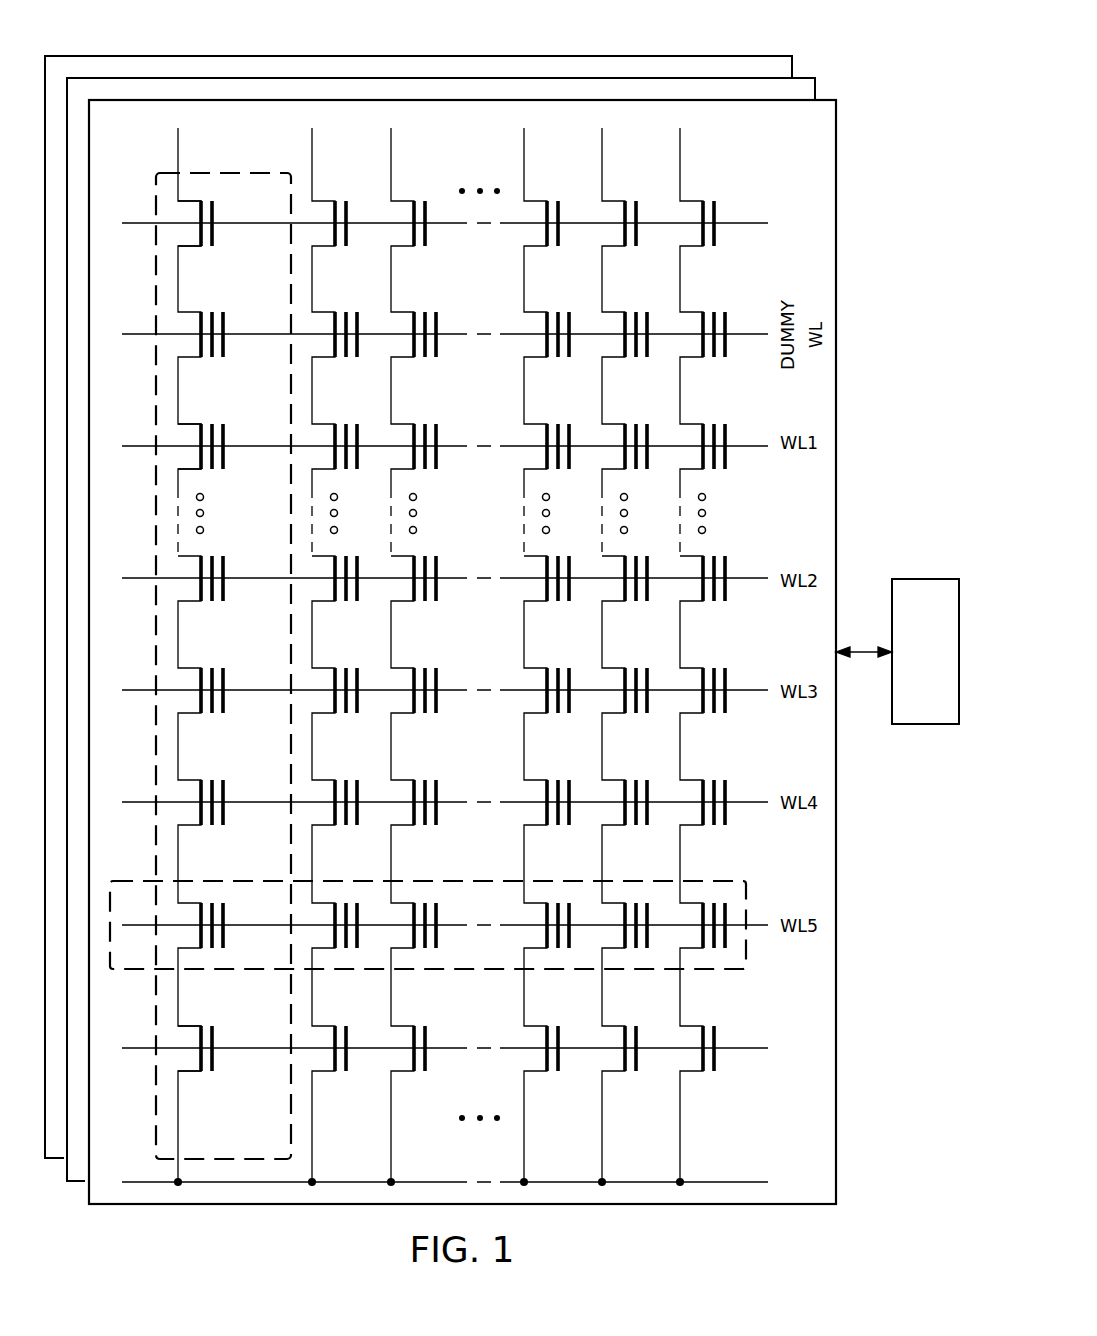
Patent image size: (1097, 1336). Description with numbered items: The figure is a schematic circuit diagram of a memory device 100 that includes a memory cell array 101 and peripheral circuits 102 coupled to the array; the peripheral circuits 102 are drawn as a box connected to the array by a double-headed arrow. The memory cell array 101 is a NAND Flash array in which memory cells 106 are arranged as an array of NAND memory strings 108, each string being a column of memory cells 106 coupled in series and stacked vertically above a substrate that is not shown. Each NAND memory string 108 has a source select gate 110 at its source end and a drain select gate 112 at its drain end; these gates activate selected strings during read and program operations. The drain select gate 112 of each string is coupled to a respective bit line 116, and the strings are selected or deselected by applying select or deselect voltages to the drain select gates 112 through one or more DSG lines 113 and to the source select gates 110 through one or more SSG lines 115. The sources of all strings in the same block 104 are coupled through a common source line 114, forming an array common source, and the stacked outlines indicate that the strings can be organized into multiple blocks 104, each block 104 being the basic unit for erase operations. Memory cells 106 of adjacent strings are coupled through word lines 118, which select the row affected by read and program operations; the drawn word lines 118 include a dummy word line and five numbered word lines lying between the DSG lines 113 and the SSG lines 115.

The memory device 100 is at (917, 74).
The memory cell array 101 is at (867, 272).
The peripheral circuits 102 is at (925, 578).
The block 104 is at (359, 90).
The memory cell 106 is at (237, 404).
The NAND memory string 108 is at (247, 166).
The source select gate 110 is at (220, 1091).
The drain select gate 112 is at (218, 262).
The DSG line 113 is at (742, 222).
The source line 114 is at (362, 1181).
The SSG line 115 is at (741, 1050).
The bit line 116 is at (179, 150).
The word line 118 is at (452, 804).